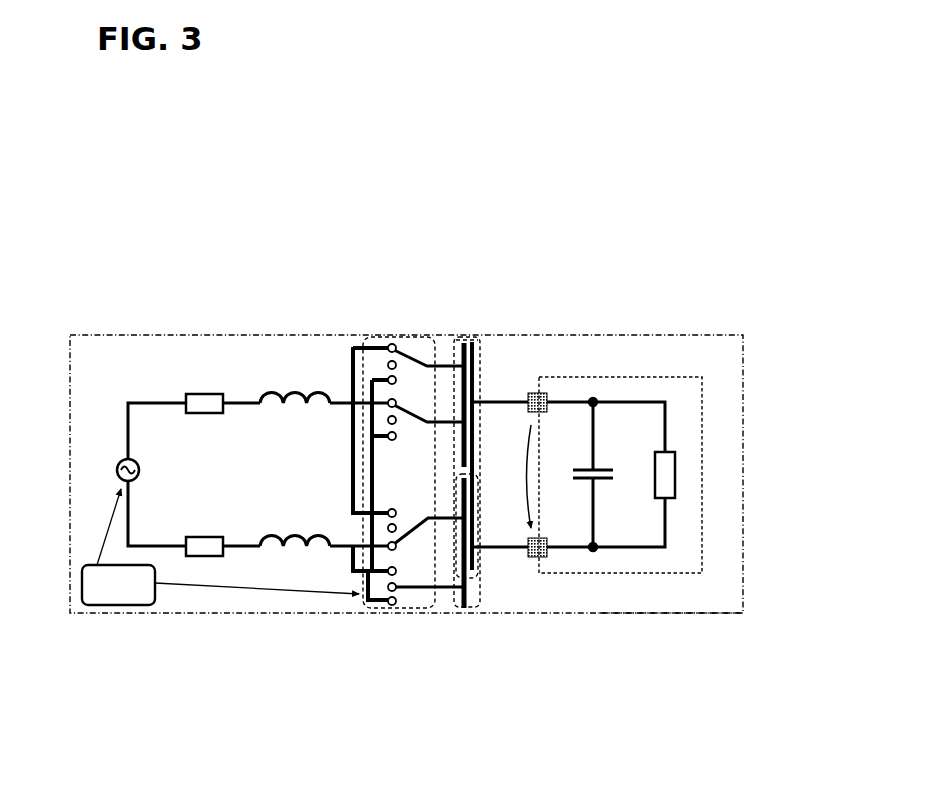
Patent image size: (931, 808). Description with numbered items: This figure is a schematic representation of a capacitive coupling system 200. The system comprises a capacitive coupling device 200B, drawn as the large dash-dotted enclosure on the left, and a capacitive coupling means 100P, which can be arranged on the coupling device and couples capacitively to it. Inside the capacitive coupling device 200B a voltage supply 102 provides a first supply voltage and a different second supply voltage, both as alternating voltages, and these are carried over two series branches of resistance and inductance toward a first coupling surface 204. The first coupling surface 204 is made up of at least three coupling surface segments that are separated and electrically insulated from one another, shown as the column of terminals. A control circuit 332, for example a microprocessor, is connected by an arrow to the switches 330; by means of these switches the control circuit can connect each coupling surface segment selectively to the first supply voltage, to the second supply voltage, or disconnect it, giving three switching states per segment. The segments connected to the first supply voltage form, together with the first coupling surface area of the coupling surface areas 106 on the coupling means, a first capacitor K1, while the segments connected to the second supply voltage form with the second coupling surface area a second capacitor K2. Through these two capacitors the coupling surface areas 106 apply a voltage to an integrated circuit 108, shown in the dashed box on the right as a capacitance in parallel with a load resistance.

The capacitive coupling device 200B is at (117, 333).
The capacitive coupling means 100P is at (693, 613).
The capacitive coupling system 200 is at (698, 249).
The voltage supply 102 is at (118, 462).
The control circuit 332 is at (130, 608).
The switch 330 is at (352, 492).
The first coupling surface 204 is at (411, 493).
The first capacitor K1 is at (467, 345).
The second capacitor K2 is at (475, 590).
The coupling surface areas 106 is at (570, 474).
The integrated circuit 108 is at (702, 447).